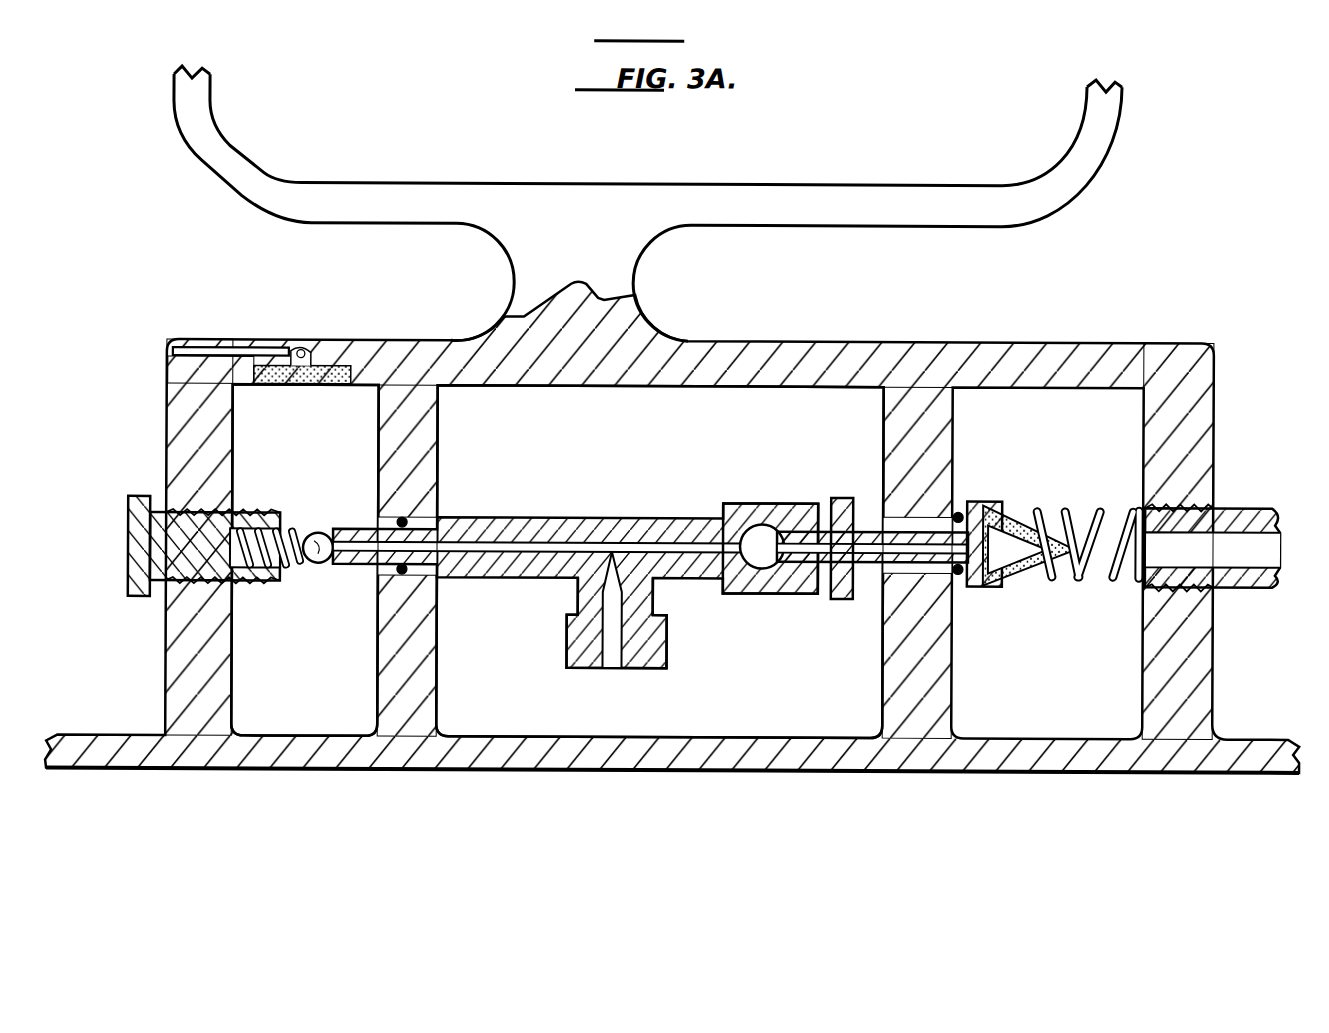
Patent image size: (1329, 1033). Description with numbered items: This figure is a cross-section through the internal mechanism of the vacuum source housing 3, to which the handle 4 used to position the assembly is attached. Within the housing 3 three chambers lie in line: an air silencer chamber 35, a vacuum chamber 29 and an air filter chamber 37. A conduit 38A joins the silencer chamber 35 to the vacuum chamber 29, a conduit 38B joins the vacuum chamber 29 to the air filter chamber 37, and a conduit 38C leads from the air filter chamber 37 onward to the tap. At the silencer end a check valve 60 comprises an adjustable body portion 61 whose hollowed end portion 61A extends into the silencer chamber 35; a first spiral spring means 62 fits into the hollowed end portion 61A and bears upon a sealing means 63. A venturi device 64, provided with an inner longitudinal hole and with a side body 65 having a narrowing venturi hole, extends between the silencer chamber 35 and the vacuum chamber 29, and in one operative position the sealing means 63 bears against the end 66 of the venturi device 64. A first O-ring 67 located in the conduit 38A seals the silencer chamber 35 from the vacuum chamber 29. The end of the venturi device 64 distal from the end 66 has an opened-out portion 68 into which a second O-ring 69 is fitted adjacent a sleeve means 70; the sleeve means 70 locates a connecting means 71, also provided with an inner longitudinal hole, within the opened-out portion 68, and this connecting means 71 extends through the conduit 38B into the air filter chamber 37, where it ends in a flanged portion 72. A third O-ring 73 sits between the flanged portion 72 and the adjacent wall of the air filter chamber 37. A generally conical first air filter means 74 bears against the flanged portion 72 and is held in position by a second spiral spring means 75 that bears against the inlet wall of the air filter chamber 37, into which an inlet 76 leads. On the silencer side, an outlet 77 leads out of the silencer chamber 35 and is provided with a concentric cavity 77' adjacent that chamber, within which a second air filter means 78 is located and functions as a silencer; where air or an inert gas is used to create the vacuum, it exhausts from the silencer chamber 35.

The vacuum source housing 3 is at (1185, 600).
The handle 4 is at (1092, 139).
The vacuum chamber 29 is at (513, 692).
The air silencer chamber 35 is at (330, 715).
The air filter chamber 37 is at (1120, 665).
The conduit 38A is at (396, 524).
The conduit 38B is at (915, 556).
The conduit 38C is at (1183, 416).
The check valve 60 is at (190, 485).
The adjustable body portion 61 is at (153, 557).
The hollowed end portion 61A is at (212, 542).
The first spiral spring means 62 is at (298, 530).
The sealing means 63 is at (300, 560).
The venturi device 64 is at (514, 515).
The side body 65 is at (648, 684).
The end 66 is at (328, 563).
The first O-ring 67 is at (408, 679).
The opened-out portion 68 is at (750, 501).
The second O-ring 69 is at (793, 568).
The sleeve means 70 is at (842, 598).
The connecting means 71 is at (908, 577).
The flanged portion 72 is at (973, 586).
The third O-ring 73 is at (960, 573).
The first air filter means 74 is at (994, 496).
The second spiral spring means 75 is at (1070, 504).
The inlet 76 is at (1243, 543).
The outlet 77 is at (231, 314).
The concentric cavity 77' is at (159, 366).
The second air filter means 78 is at (320, 365).